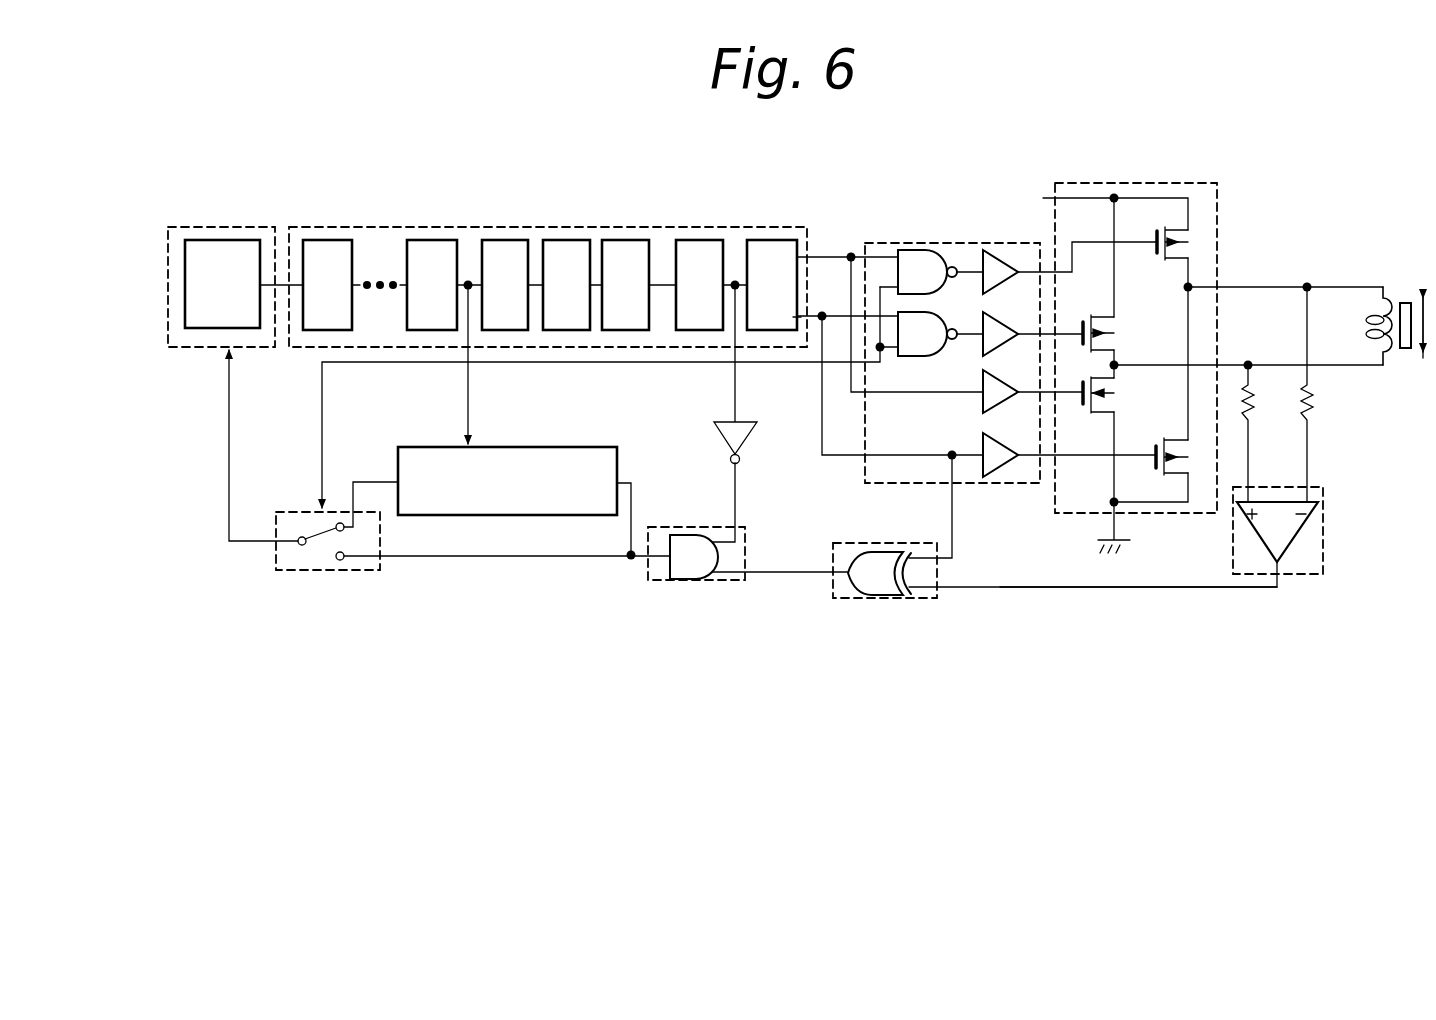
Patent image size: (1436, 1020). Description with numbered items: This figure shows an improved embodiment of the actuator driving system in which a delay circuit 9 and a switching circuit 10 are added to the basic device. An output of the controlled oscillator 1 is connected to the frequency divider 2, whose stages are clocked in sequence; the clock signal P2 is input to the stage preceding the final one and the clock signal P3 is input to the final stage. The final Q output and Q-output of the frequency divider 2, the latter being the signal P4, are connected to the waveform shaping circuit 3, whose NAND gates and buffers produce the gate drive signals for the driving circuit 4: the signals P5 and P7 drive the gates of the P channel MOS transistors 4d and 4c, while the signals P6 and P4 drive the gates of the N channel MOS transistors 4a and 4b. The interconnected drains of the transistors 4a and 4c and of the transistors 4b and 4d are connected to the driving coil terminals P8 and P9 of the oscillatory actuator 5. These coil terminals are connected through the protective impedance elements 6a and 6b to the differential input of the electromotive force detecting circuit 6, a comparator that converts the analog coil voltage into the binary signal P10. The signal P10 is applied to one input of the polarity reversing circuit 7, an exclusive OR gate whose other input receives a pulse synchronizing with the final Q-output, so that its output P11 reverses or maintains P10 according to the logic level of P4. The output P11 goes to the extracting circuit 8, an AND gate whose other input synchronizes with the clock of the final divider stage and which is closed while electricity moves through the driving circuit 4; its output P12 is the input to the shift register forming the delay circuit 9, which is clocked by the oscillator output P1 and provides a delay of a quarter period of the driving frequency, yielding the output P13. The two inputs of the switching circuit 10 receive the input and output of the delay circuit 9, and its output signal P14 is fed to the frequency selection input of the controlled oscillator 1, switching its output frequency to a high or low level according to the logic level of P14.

The controlled oscillator 1 is at (222, 230).
The frequency divider 2 is at (465, 237).
The waveform shaping circuit 3 is at (905, 248).
The driving circuit 4 is at (1207, 228).
The MOS transistor 4a is at (1119, 395).
The MOS transistor 4b is at (1156, 470).
The MOS transistor 4c is at (1119, 334).
The MOS transistor 4d is at (1169, 264).
The oscillatory actuator 5 is at (1390, 290).
The electromotive force detecting circuit 6 is at (1310, 527).
The protective impedance element 6a is at (1267, 433).
The protective impedance element 6b is at (1327, 394).
The polarity reversing circuit 7 is at (930, 592).
The extracting circuit 8 is at (658, 581).
The delay circuit 9 is at (598, 460).
The switching circuit 10 is at (302, 556).
The logic signal P1 is at (474, 395).
The clock signal P2 is at (665, 274).
The clock signal P3 is at (773, 366).
The Q-output P4 is at (907, 461).
The gate drive signal P5 is at (964, 346).
The gate drive signal P6 is at (963, 402).
The gate drive signal P7 is at (958, 262).
The driving coil terminal P8 is at (1250, 358).
The driving coil terminal P9 is at (1307, 280).
The detecting circuit output P10 is at (1096, 591).
The polarity reversing circuit output P11 is at (786, 580).
The extracting circuit output P12 is at (566, 562).
The shift register output P13 is at (378, 477).
The switching circuit output signal P14 is at (224, 467).